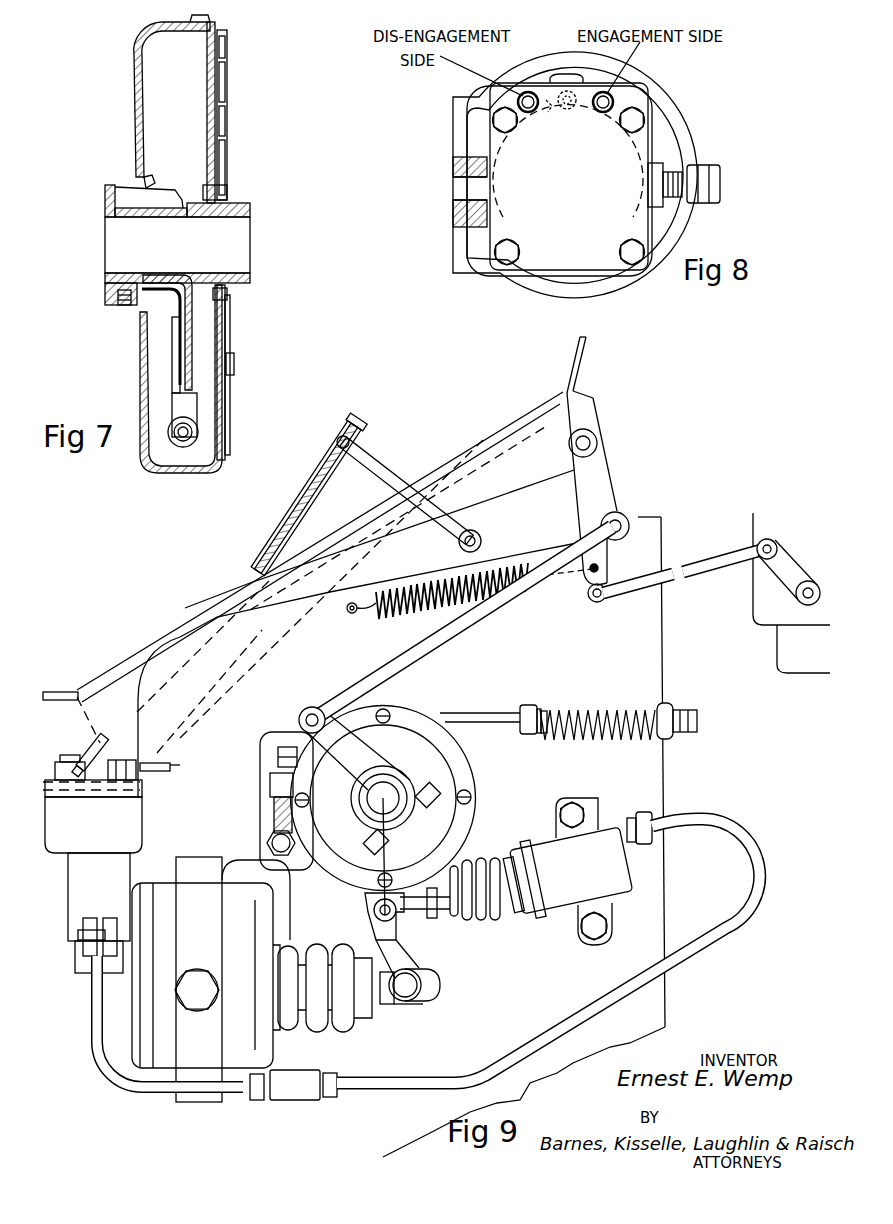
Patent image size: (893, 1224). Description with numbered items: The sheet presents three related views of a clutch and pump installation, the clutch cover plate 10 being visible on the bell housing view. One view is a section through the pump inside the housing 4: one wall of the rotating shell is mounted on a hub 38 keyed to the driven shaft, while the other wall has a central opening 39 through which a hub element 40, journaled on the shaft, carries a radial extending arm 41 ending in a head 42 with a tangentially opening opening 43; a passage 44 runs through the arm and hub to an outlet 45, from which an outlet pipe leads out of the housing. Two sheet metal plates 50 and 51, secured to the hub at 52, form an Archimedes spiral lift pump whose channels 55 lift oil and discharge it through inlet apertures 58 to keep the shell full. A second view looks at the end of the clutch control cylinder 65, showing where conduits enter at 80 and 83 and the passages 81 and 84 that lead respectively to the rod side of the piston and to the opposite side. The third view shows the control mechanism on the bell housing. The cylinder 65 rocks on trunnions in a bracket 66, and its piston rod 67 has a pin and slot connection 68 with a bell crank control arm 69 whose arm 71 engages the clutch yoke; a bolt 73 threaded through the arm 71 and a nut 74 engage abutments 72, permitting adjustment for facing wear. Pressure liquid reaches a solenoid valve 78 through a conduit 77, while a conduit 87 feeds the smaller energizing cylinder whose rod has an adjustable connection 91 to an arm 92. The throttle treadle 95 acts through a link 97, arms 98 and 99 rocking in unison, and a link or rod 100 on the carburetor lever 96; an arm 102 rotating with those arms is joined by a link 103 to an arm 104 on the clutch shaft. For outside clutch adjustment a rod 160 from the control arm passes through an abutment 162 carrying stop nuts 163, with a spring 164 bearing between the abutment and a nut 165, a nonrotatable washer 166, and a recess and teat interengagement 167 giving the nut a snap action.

In FIG. 9, the housing 4 is at (310, 1110).
In FIG. 9, the cover plate 10 is at (305, 712).
In FIG. 7, the hub 38 is at (252, 210).
In FIG. 7, the central opening 39 is at (145, 184).
In FIG. 7, the hub element 40 is at (108, 190).
In FIG. 7, the radial extending arm 41 is at (176, 350).
In FIG. 7, the head 42 is at (185, 447).
In FIG. 7, the opening 43 is at (176, 440).
In FIG. 7, the passage 44 is at (180, 335).
In FIG. 7, the outlet 45 is at (122, 304).
In FIG. 7, the sheet metal plate 50 is at (235, 366).
In FIG. 7, the sheet metal plate 51 is at (231, 338).
In FIG. 7, the securing point 52 is at (226, 192).
In FIG. 7, the channels 55 is at (224, 121).
In FIG. 7, the inlet apertures 58 is at (228, 296).
In FIG. 8, the clutch control cylinder 65 is at (634, 149).
In FIG. 9, the clutch control cylinder 65 is at (262, 922).
In FIG. 8, the bracket 66 is at (690, 160).
In FIG. 9, the piston rod 67 is at (388, 1004).
In FIG. 9, the pin and slot connection 68 is at (425, 988).
In FIG. 9, the control arm 69 is at (420, 950).
In FIG. 9, the arm 71 is at (270, 786).
In FIG. 9, the abutments 72 is at (275, 735).
In FIG. 9, the bolt 73 is at (278, 754).
In FIG. 9, the nut 74 is at (266, 838).
In FIG. 9, the conduit 77 is at (118, 1082).
In FIG. 9, the solenoid valve 78 is at (85, 870).
In FIG. 8, the cylinder entry 80 is at (612, 100).
In FIG. 8, the passage 81 is at (583, 110).
In FIG. 8, the cylinder entry 83 is at (524, 95).
In FIG. 8, the passage 84 is at (548, 112).
In FIG. 9, the conduit 87 is at (675, 965).
In FIG. 9, the adjustable connection 91 is at (432, 916).
In FIG. 9, the arm 92 is at (370, 900).
In FIG. 9, the throttle treadle 95 is at (318, 470).
In FIG. 9, the carburetor lever 96 is at (770, 576).
In FIG. 9, the link 97 is at (385, 470).
In FIG. 9, the arm 98 is at (548, 490).
In FIG. 9, the arm 99 is at (590, 572).
In FIG. 9, the link or rod 100 is at (700, 566).
In FIG. 9, the arm 102 is at (612, 493).
In FIG. 9, the link 103 is at (440, 610).
In FIG. 9, the arm 104 is at (330, 732).
In FIG. 9, the rod 160 is at (487, 702).
In FIG. 9, the abutment 162 is at (668, 707).
In FIG. 9, the stop nuts 163 is at (690, 733).
In FIG. 9, the spring 164 is at (598, 710).
In FIG. 9, the nut 165 is at (525, 736).
In FIG. 9, the washer 166 is at (548, 736).
In FIG. 9, the interengagement 167 is at (540, 736).